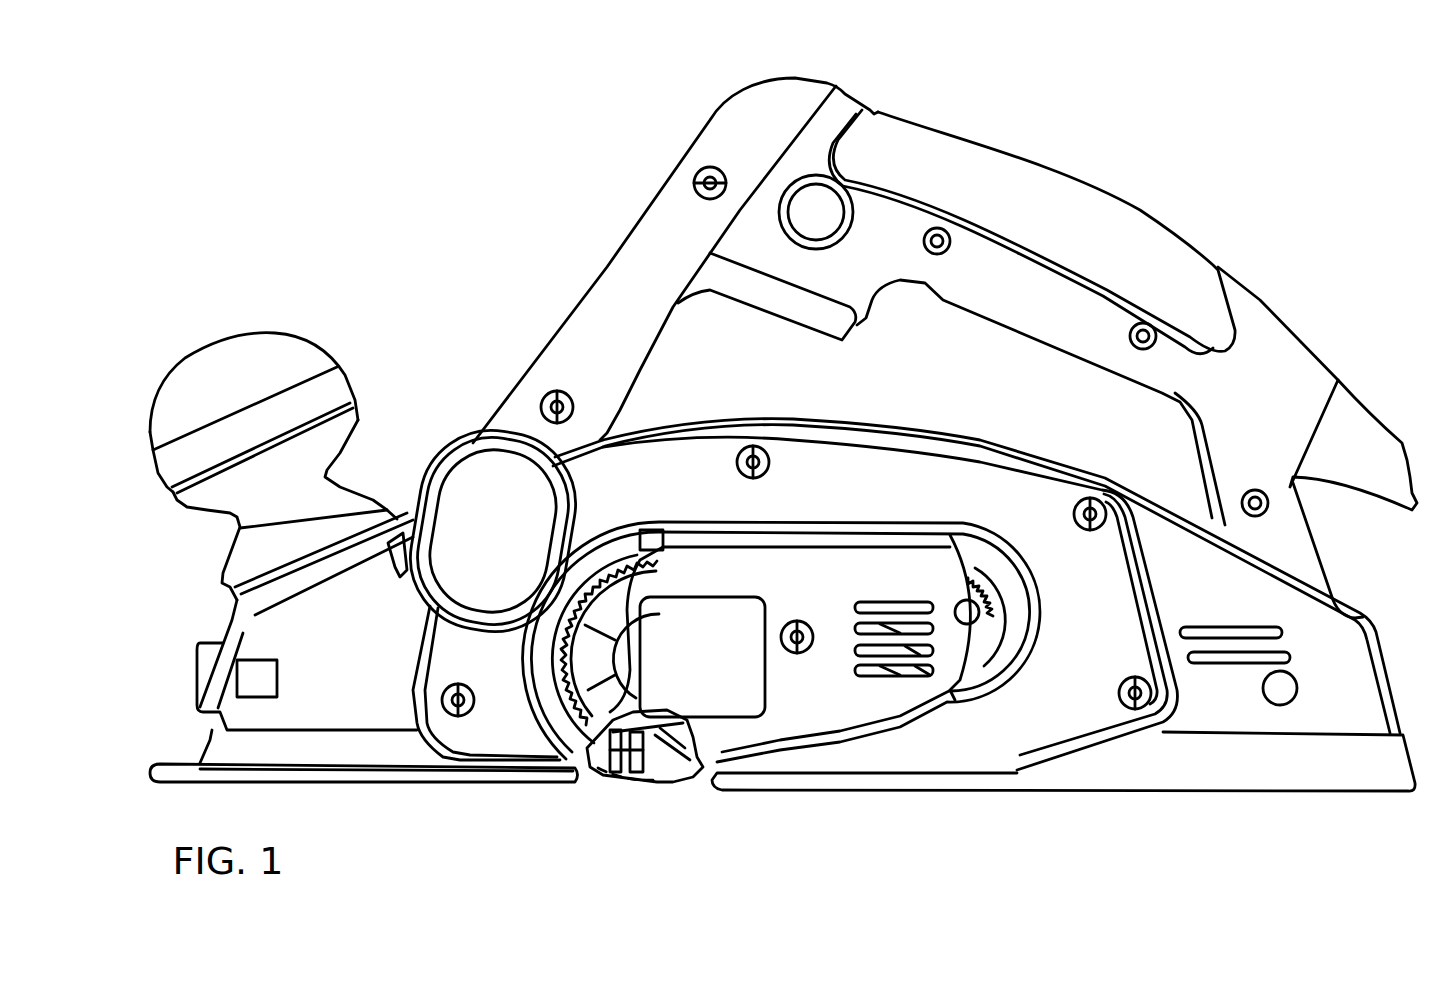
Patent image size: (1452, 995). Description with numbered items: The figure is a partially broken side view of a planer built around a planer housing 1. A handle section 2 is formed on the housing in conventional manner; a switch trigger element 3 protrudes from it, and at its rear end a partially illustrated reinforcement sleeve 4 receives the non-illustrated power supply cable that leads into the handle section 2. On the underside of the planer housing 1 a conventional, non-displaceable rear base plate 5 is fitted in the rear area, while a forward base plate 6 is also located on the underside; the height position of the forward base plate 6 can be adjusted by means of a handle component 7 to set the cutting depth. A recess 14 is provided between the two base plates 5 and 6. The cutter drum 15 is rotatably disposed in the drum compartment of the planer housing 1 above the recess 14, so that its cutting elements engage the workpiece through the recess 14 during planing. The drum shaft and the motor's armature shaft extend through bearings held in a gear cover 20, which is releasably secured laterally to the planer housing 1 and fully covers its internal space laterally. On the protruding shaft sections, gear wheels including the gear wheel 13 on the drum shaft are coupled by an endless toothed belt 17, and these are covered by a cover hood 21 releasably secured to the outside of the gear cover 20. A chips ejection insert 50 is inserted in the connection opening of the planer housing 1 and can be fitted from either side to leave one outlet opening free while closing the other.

The planer housing 1 is at (1333, 693).
The handle section 2 is at (1060, 207).
The switch trigger element 3 is at (825, 317).
The reinforcement sleeve 4 is at (1362, 440).
The rear base plate 5 is at (1218, 763).
The forward base plate 6 is at (377, 757).
The handle component 7 is at (272, 358).
The gear wheel 13 is at (587, 690).
The recess 14 is at (700, 775).
The cutter drum 15 is at (645, 750).
The toothed belt 17 is at (634, 562).
The gear cover 20 is at (1083, 697).
The cover hood 21 is at (900, 688).
The chips ejection insert 50 is at (487, 478).